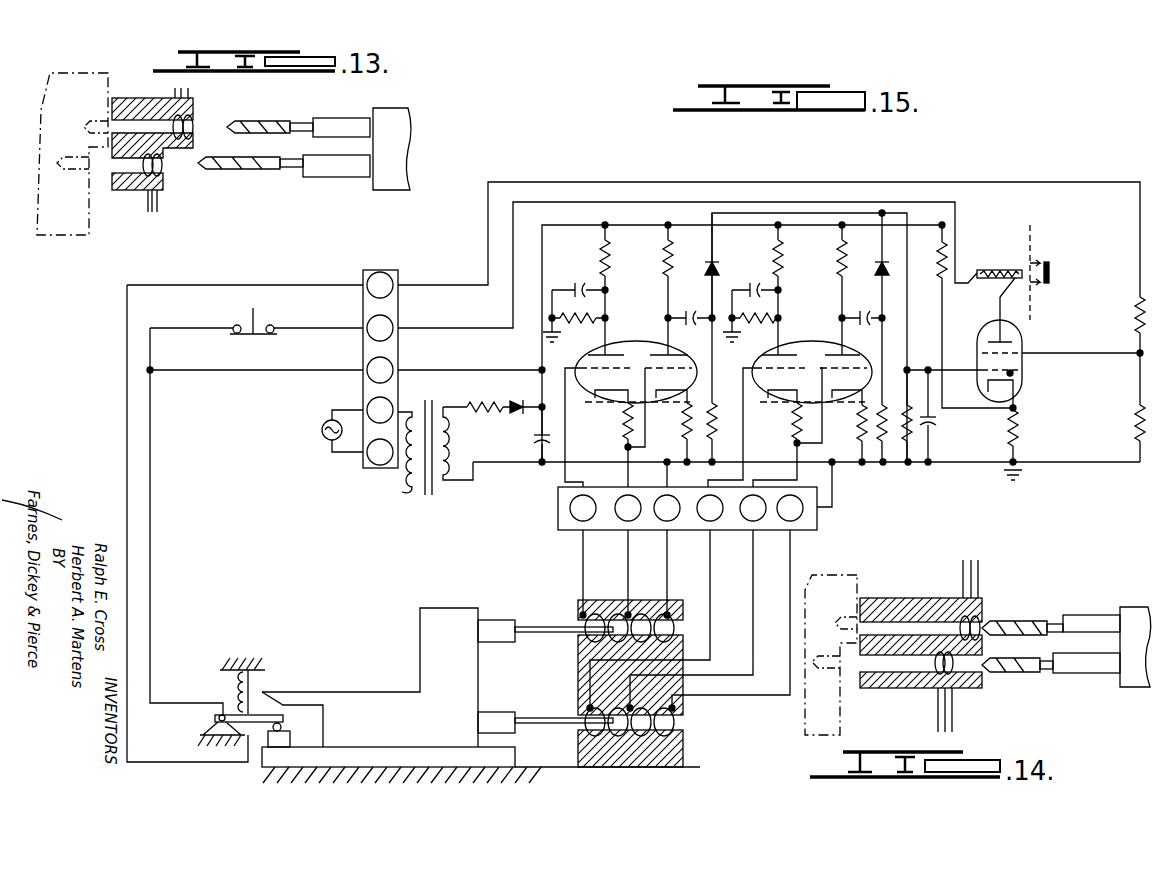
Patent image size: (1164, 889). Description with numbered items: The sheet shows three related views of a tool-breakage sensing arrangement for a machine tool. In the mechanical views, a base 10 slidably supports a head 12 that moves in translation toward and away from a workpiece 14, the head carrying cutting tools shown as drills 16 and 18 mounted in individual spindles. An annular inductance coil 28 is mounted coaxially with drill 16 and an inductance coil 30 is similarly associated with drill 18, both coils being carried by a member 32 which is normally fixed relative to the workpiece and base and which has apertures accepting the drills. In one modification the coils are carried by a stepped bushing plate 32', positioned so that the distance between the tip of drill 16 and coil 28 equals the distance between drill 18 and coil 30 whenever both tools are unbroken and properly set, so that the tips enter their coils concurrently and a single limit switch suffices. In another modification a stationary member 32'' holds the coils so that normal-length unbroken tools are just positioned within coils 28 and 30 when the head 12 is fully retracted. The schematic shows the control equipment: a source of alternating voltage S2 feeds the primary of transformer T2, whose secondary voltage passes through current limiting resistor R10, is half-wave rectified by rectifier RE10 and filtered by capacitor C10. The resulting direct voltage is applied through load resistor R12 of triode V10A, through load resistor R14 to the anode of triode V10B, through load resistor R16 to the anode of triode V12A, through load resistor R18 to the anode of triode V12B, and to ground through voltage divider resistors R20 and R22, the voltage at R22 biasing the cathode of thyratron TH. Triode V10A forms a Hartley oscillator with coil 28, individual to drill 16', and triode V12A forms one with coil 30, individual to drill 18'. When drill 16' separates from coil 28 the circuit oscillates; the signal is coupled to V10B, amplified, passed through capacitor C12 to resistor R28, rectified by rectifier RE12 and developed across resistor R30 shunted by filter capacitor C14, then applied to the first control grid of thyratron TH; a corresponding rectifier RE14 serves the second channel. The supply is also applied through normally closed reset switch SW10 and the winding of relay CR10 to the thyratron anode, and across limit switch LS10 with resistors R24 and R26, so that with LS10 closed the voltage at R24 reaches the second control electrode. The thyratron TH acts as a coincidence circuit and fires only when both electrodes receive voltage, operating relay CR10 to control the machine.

In FIG. 15, the base 10 is at (278, 762).
In FIG. 13, the head 12 is at (405, 110).
In FIG. 14, the head 12 is at (1120, 600).
In FIG. 15, the head 12 is at (398, 685).
In FIG. 13, the workpiece 14 is at (88, 73).
In FIG. 14, the workpiece 14 is at (852, 575).
In FIG. 13, the drill 16 is at (298, 112).
In FIG. 14, the drill 16 is at (1051, 604).
In FIG. 13, the drill 18 is at (284, 179).
In FIG. 14, the drill 18 is at (1051, 678).
In FIG. 15, the drill 16' is at (564, 613).
In FIG. 15, the drill 18' is at (564, 705).
In FIG. 13, the inductance coil 28 is at (190, 128).
In FIG. 14, the inductance coil 28 is at (955, 618).
In FIG. 15, the inductance coil 28 is at (632, 613).
In FIG. 13, the inductance coil 30 is at (186, 170).
In FIG. 14, the inductance coil 30 is at (932, 690).
In FIG. 15, the inductance coil 30 is at (662, 735).
In FIG. 15, the member 32 is at (684, 622).
In FIG. 13, the stepped bushing plate 32' is at (178, 145).
In FIG. 14, the member 32'' is at (918, 681).
In FIG. 15, the reset switch SW10 is at (243, 336).
In FIG. 15, the source of alternating voltage S2 is at (322, 431).
In FIG. 15, the transformer T2 is at (432, 400).
In FIG. 15, the current limiting resistor R10 is at (470, 404).
In FIG. 15, the rectifier RE10 is at (518, 414).
In FIG. 15, the capacitor C10 is at (548, 440).
In FIG. 15, the load resistor R12 is at (600, 252).
In FIG. 15, the load resistor R14 is at (664, 252).
In FIG. 15, the capacitor C12 is at (688, 312).
In FIG. 15, the rectifier RE12 is at (714, 266).
In FIG. 15, the triode V10A is at (600, 345).
In FIG. 15, the triode V10B is at (697, 362).
In FIG. 15, the resistor R28 is at (718, 430).
In FIG. 15, the load resistor R16 is at (784, 262).
In FIG. 15, the load resistor R18 is at (840, 272).
In FIG. 15, the rectifier RE14 is at (876, 268).
In FIG. 15, the triode V12A is at (774, 345).
In FIG. 15, the triode V12B is at (870, 352).
In FIG. 15, the resistor R30 is at (903, 440).
In FIG. 15, the filter capacitor C14 is at (936, 421).
In FIG. 15, the voltage divider resistor R20 is at (948, 242).
In FIG. 15, the relay CR10 is at (990, 268).
In FIG. 15, the thyratron TH is at (1025, 342).
In FIG. 15, the voltage divider resistor R22 is at (1020, 436).
In FIG. 15, the resistor R24 is at (1136, 310).
In FIG. 15, the resistor R26 is at (1137, 428).
In FIG. 15, the limit switch LS10 is at (250, 695).